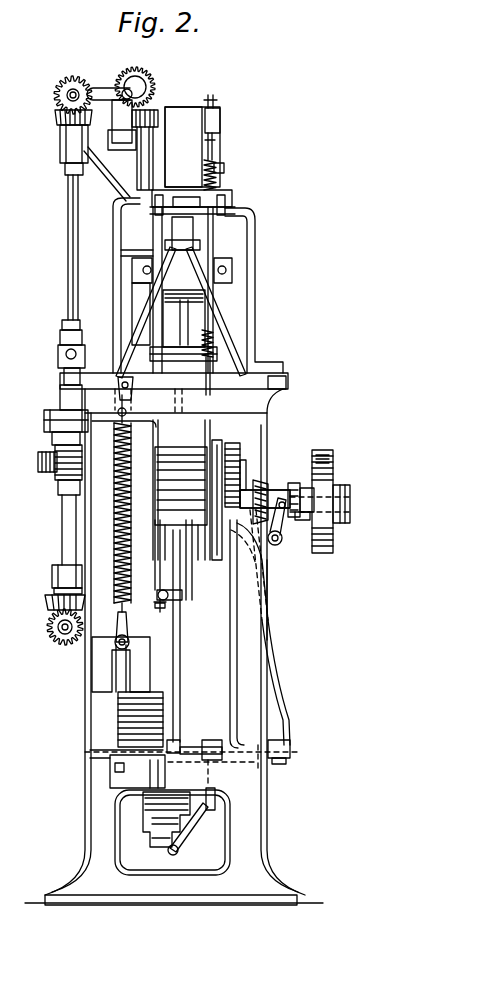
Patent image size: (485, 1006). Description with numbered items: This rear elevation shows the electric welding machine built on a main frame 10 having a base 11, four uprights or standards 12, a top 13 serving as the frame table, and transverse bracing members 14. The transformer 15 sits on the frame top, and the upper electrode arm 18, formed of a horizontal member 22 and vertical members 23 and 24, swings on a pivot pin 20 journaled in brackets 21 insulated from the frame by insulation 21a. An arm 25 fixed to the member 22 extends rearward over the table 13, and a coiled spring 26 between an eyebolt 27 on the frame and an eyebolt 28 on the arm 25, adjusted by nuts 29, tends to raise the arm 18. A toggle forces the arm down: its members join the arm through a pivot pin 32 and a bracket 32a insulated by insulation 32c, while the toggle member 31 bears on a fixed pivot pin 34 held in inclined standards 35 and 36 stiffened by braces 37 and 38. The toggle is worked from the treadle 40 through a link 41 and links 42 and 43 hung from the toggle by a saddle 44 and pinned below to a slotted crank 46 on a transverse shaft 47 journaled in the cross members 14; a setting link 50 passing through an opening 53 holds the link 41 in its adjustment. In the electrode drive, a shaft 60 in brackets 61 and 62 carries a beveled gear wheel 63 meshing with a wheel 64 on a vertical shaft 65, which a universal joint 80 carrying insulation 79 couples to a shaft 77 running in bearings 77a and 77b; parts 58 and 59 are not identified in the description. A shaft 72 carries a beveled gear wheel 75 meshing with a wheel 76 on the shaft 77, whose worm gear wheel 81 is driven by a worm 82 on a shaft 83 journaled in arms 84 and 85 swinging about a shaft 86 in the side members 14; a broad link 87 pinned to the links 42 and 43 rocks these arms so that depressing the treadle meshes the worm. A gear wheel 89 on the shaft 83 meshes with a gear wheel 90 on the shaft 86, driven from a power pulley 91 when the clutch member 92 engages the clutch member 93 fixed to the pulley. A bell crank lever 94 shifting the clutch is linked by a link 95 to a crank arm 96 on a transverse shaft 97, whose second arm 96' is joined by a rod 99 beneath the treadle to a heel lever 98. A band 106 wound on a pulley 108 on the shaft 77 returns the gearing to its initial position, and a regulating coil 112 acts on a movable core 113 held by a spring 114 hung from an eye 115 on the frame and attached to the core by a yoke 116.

The main frame 10 is at (273, 601).
The base 11 is at (212, 880).
The uprights or standards 12 is at (86, 675).
The top 13 is at (268, 418).
The transverse bracing members 14 is at (205, 752).
The transformer 15 is at (190, 308).
The upper electrode arm 18 is at (206, 102).
The pivot pin 20 is at (183, 345).
The brackets 21 is at (120, 340).
The insulation 21a is at (284, 386).
The horizontal member 22 is at (172, 107).
The vertical member 23 is at (113, 212).
The vertical member 24 is at (256, 219).
The arm 25 is at (222, 120).
The coiled spring 26 is at (217, 173).
The eyebolt 27 is at (210, 385).
The eyebolt 28 is at (213, 145).
The nuts 29 is at (215, 100).
The toggle member 31 is at (121, 253).
The pivot pin 32 is at (214, 198).
The bracket 32a is at (224, 168).
The insulation 32c is at (185, 197).
The fixed pivot pin 34 is at (200, 244).
The inclined standard 35 is at (137, 285).
The inclined standard 36 is at (205, 292).
The brace 37 is at (136, 305).
The brace 38 is at (215, 340).
The treadle 40 is at (153, 805).
The link 41 is at (182, 665).
The link 42 is at (165, 242).
The link 43 is at (215, 252).
The saddle 44 is at (235, 206).
The slotted crank 46 is at (157, 562).
The transverse shaft 47 is at (119, 600).
The setting link 50 is at (183, 598).
The opening 53 is at (158, 607).
The bevel gear 58 is at (165, 112).
The gear 59 is at (146, 71).
The shaft 60 is at (110, 88).
The bracket 61 is at (118, 139).
The bracket 62 is at (62, 150).
The beveled gear wheel 63 is at (58, 86).
The beveled gear wheel 64 is at (56, 117).
The vertical shaft 65 is at (68, 207).
The shaft 72 is at (54, 636).
The beveled gear wheel 75 is at (65, 641).
The beveled gear wheel 76 is at (50, 601).
The shaft 77 is at (62, 528).
The bearing 77a is at (62, 392).
The bearing 77b is at (56, 579).
The insulation 79 is at (62, 325).
The universal joint 80 is at (60, 354).
The worm gear wheel 81 is at (50, 470).
The worm 82 is at (62, 476).
The shaft 83 is at (83, 462).
The arm 84 is at (137, 469).
The arm 85 is at (218, 522).
The shaft 86 is at (189, 562).
The broad link 87 is at (166, 470).
The gear wheel 89 is at (232, 451).
The gear wheel 90 is at (240, 487).
The power driven pulley 91 is at (330, 458).
The clutch member 92 is at (289, 487).
The clutch member 93 is at (302, 532).
The bell crank lever 94 is at (278, 544).
The link 95 is at (286, 725).
The crank arm 96 is at (296, 748).
The second arm 96' is at (238, 777).
The transverse shaft 97 is at (190, 746).
The heel lever 98 is at (148, 826).
The rod 99 is at (196, 812).
The band 106 is at (46, 426).
The pulley 108 is at (50, 436).
The regulating coil 112 is at (118, 720).
The movable core 113 is at (150, 656).
The spring 114 is at (115, 522).
The eye 115 is at (118, 414).
The yoke 116 is at (117, 618).